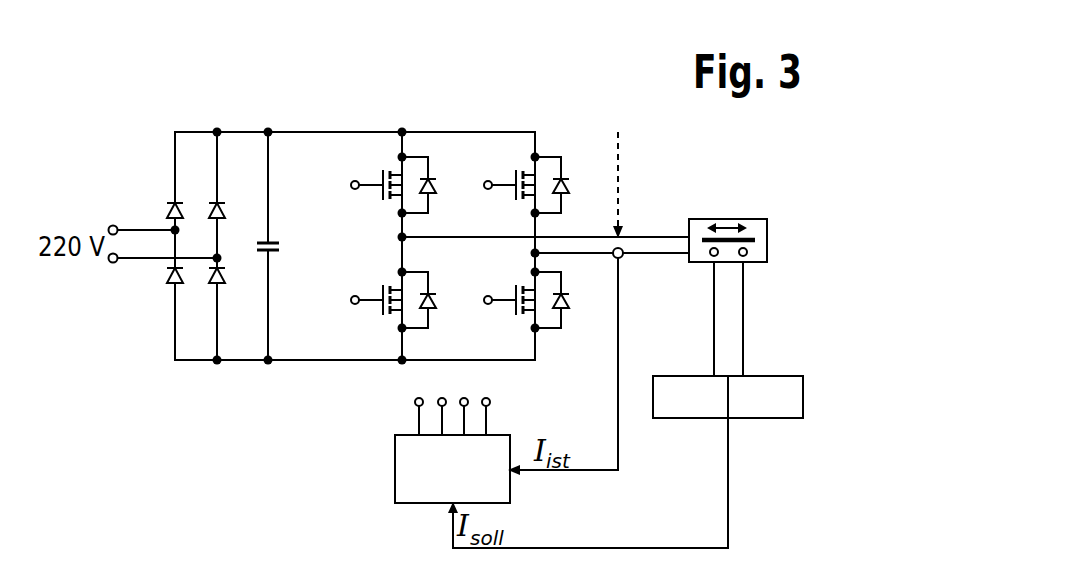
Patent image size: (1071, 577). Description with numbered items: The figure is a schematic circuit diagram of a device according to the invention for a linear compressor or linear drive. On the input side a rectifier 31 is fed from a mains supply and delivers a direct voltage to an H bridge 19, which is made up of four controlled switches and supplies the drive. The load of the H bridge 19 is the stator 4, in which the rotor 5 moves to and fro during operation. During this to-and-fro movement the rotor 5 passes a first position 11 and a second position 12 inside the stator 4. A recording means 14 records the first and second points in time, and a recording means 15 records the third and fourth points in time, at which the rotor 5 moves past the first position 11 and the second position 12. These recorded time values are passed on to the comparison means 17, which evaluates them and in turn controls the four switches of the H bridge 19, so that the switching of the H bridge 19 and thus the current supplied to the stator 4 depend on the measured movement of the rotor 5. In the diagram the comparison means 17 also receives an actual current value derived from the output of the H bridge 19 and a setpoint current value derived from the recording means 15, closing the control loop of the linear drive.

The rectifier 31 is at (217, 130).
The H bridge 19 is at (469, 128).
The stator 4 is at (765, 219).
The rotor 5 is at (767, 243).
The first position 11 is at (708, 262).
The second position 12 is at (750, 262).
The recording means 14 is at (690, 400).
The recording means 15 is at (793, 395).
The comparison means 17 is at (467, 481).